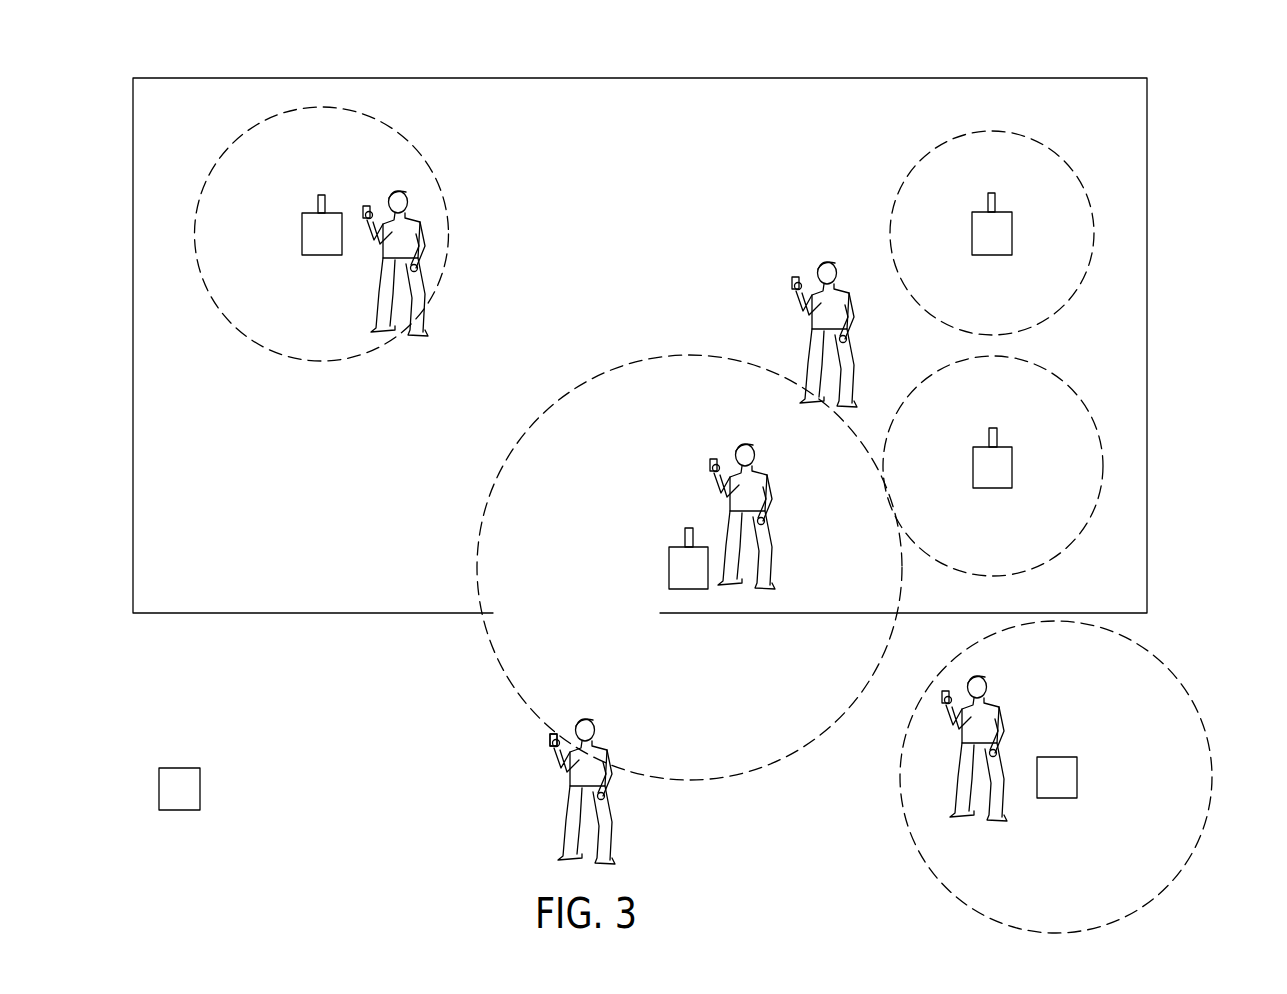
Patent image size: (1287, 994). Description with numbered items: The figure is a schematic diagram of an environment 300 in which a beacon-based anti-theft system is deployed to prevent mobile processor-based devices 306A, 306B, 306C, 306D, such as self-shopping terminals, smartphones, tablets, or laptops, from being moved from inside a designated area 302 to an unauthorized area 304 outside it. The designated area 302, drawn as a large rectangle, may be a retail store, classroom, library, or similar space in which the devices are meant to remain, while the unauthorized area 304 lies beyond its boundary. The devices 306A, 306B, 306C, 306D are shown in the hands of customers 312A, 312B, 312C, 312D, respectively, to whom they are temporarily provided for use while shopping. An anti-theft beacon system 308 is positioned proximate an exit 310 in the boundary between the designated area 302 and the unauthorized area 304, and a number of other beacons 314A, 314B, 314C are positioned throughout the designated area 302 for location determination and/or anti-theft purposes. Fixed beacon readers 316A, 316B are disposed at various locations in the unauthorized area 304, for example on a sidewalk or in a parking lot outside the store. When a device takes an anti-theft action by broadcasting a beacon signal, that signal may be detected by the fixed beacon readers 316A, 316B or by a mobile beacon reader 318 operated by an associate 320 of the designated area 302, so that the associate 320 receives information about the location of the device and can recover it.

The environment 300 is at (1122, 48).
The designated area 302 is at (1108, 124).
The unauthorized area 304 is at (190, 652).
The mobile processor-based device 306A is at (366, 205).
The mobile processor-based device 306B is at (794, 288).
The mobile processor-based device 306C is at (712, 466).
The mobile processor-based device 306D is at (942, 708).
The anti-theft beacon system 308 is at (669, 568).
The exit 310 is at (660, 613).
The customer 312A is at (428, 240).
The customer 312B is at (849, 290).
The customer 312C is at (770, 502).
The customer 312D is at (1003, 722).
The beacon 314A is at (302, 235).
The beacon 314B is at (1012, 235).
The beacon 314C is at (1012, 465).
The fixed beacon reader 316A is at (159, 790).
The fixed beacon reader 316B is at (1077, 778).
The mobile beacon reader 318 is at (549, 745).
The associate 320 is at (612, 837).